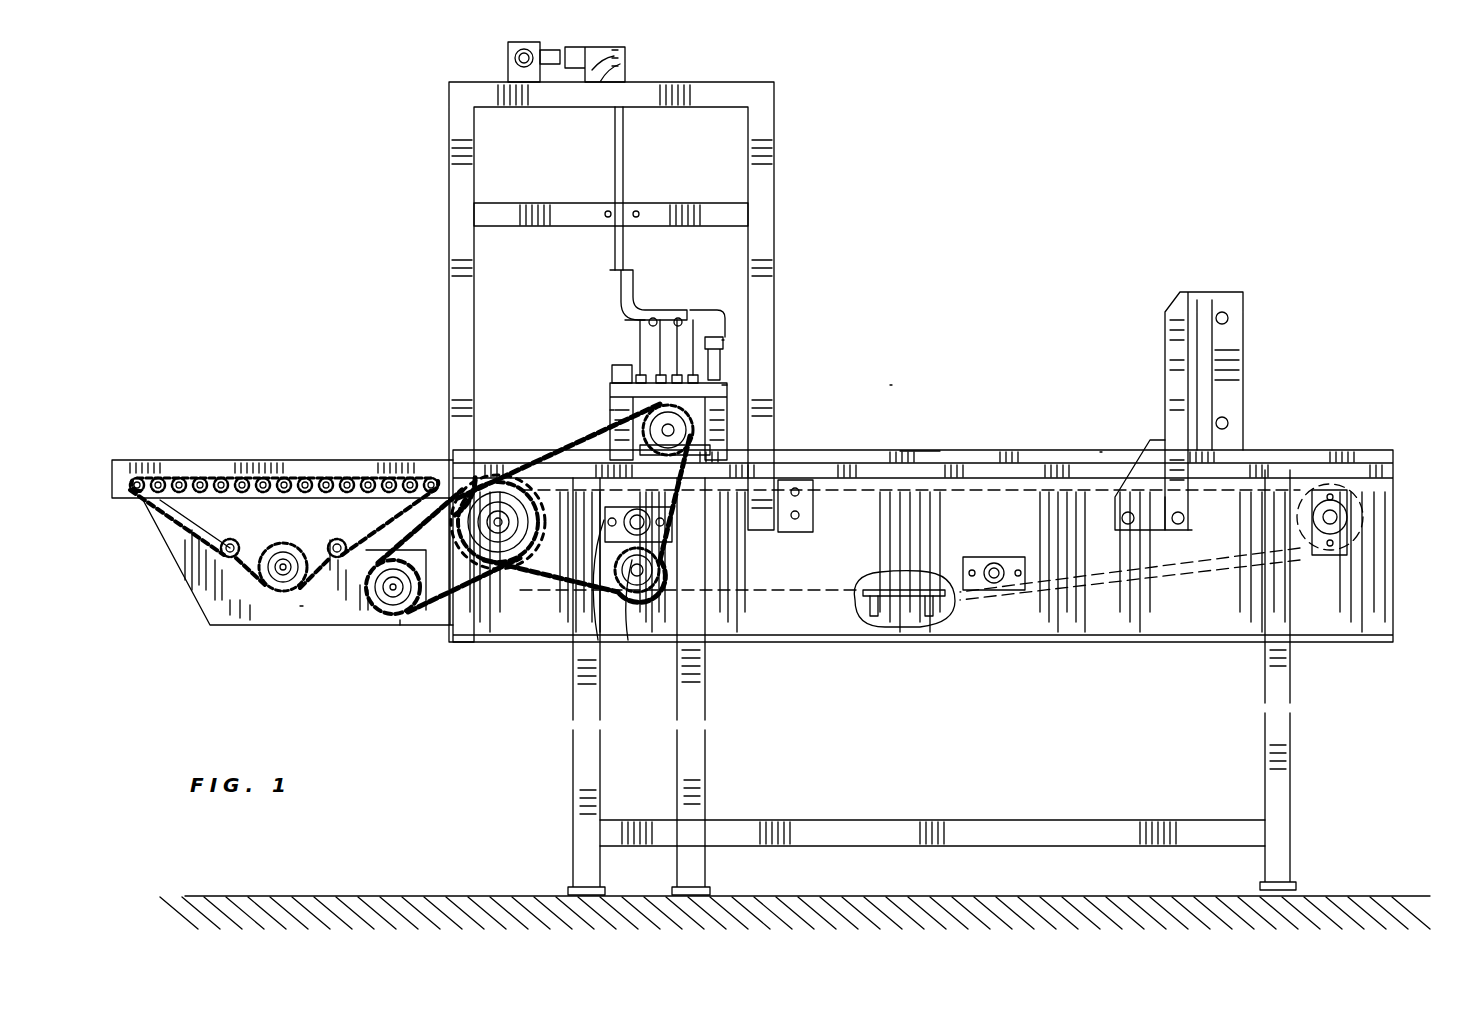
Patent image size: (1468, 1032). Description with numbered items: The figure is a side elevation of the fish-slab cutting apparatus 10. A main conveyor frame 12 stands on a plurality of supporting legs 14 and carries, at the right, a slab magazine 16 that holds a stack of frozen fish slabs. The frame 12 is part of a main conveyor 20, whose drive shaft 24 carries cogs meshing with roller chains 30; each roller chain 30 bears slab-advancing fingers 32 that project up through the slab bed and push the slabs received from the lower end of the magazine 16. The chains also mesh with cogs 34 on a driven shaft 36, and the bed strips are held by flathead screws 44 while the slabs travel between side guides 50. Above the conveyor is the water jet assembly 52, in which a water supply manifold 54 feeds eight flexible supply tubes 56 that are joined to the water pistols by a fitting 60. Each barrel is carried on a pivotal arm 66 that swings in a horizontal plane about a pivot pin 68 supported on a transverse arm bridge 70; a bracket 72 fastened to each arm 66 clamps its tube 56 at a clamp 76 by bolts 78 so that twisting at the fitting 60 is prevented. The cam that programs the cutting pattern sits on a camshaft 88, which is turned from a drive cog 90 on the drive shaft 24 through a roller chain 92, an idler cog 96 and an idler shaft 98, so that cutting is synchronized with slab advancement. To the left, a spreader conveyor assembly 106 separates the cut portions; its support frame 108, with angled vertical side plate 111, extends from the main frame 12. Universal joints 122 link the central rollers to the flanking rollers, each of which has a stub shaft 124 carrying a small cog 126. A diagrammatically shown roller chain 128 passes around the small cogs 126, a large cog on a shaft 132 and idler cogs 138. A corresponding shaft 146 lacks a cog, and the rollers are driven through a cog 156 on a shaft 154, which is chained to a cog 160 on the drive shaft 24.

The apparatus 10 is at (895, 387).
The main conveyor frame 12 is at (1170, 645).
The supporting legs 14 is at (573, 778).
The slab magazine 16 is at (1243, 355).
The main conveyor 20 is at (1030, 430).
The drive shaft 24 is at (500, 520).
The roller chain 30 is at (904, 628).
The slab-advancing fingers 32 is at (875, 628).
The cogs 34 is at (1395, 510).
The driven shaft 36 is at (1330, 517).
The flathead screws 44 is at (720, 445).
The side guides 50 is at (920, 450).
The water jet assembly 52 is at (575, 387).
The water supply manifold 54 is at (508, 60).
The flexible supply tubes 56 is at (625, 178).
The fitting 60 is at (722, 345).
The pivotal arm 66 is at (724, 385).
The pivot pin 68 is at (612, 365).
The arm bridge 70 is at (612, 412).
The bracket 72 is at (645, 285).
The clamp 76 is at (655, 305).
The bolts 78 is at (625, 322).
The camshaft 88 is at (676, 428).
The drive cog 90 is at (533, 545).
The roller chain 92 is at (600, 640).
The idler cog 96 is at (690, 545).
The idler shaft 98 is at (637, 572).
The spreader conveyor assembly 106 is at (259, 447).
The support frame 108 is at (195, 628).
The vertical side plate 111 is at (300, 606).
The universal joints 122 is at (277, 536).
The stub shaft 124 is at (223, 470).
The small cogs 126 is at (353, 470).
The roller chain 128 is at (160, 500).
The shaft 132 is at (283, 570).
The idler cogs 138 is at (235, 558).
The shaft 146 is at (470, 572).
The shaft 154 is at (393, 589).
The cog 156 is at (438, 570).
The cog 160 is at (500, 545).